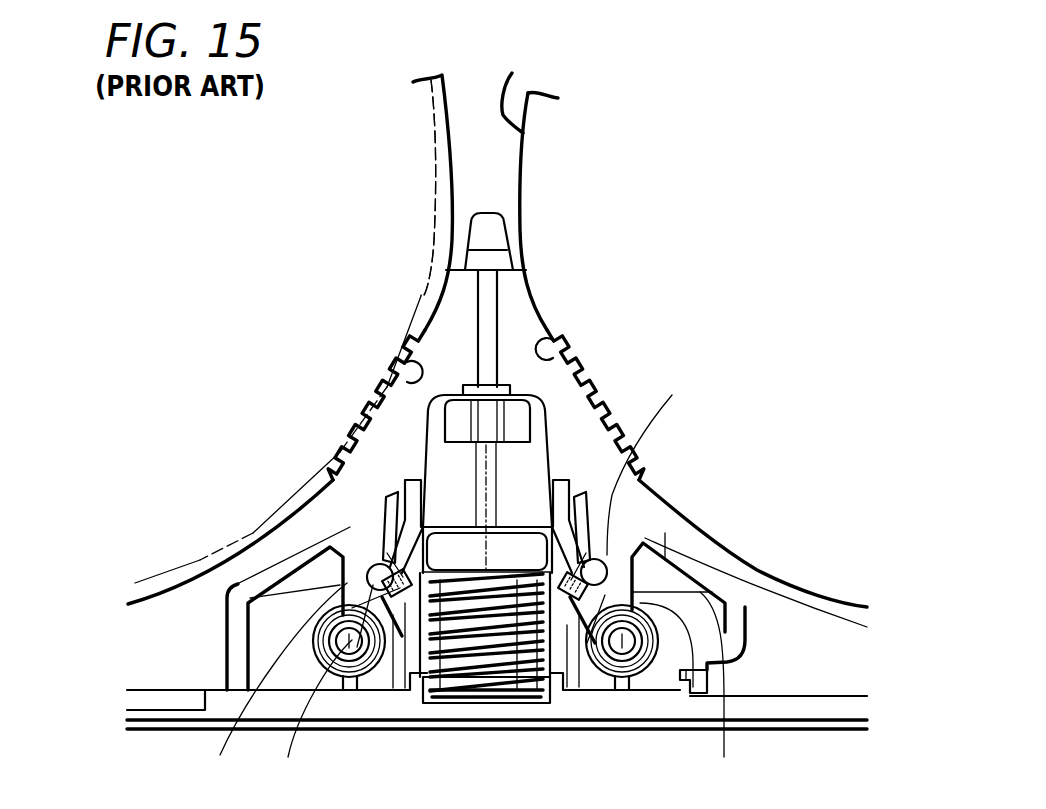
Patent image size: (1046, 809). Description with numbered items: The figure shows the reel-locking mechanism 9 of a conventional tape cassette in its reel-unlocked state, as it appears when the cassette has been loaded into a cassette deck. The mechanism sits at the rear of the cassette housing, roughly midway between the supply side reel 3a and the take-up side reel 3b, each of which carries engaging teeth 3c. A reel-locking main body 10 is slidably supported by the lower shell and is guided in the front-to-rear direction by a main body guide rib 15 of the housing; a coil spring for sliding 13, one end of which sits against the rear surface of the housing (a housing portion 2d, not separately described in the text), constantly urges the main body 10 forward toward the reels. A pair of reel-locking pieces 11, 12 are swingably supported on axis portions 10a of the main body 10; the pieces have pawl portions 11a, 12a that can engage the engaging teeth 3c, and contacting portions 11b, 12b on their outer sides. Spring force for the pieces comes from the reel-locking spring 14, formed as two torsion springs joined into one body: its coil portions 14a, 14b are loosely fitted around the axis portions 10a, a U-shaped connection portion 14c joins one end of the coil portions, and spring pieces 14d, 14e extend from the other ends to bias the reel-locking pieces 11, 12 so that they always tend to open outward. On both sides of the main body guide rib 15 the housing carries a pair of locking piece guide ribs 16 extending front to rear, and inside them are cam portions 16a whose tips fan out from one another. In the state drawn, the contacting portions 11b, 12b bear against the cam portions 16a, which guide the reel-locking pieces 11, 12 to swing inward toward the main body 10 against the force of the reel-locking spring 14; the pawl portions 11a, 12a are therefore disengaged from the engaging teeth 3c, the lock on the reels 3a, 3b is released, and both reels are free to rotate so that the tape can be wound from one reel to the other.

The base plate 2d is at (787, 712).
The supply side reel 3a is at (446, 118).
The take-up side reel 3b is at (502, 195).
The engaging teeth 3c is at (408, 356).
The reel-locking mechanism 9 is at (560, 400).
The reel-locking main body 10 is at (458, 482).
The axis portion 10a is at (354, 652).
The reel-locking piece 11 is at (227, 590).
The pawl portion 11a is at (386, 500).
The contacting portion 11b is at (330, 565).
The reel-locking piece 12 is at (690, 590).
The pawl portion 12a is at (608, 553).
The contacting portion 12b is at (610, 553).
The spring for sliding 13 is at (496, 693).
The reel-locking spring 14 is at (493, 511).
The coil portion 14a is at (352, 640).
The coil portion 14b is at (645, 650).
The U-shaped connection portion 14c is at (505, 520).
The spring piece 14d is at (347, 583).
The spring piece 14e is at (741, 700).
The push rod 15 is at (495, 300).
The locking piece guide rib 16 is at (348, 577).
The cam portion 16a is at (388, 545).